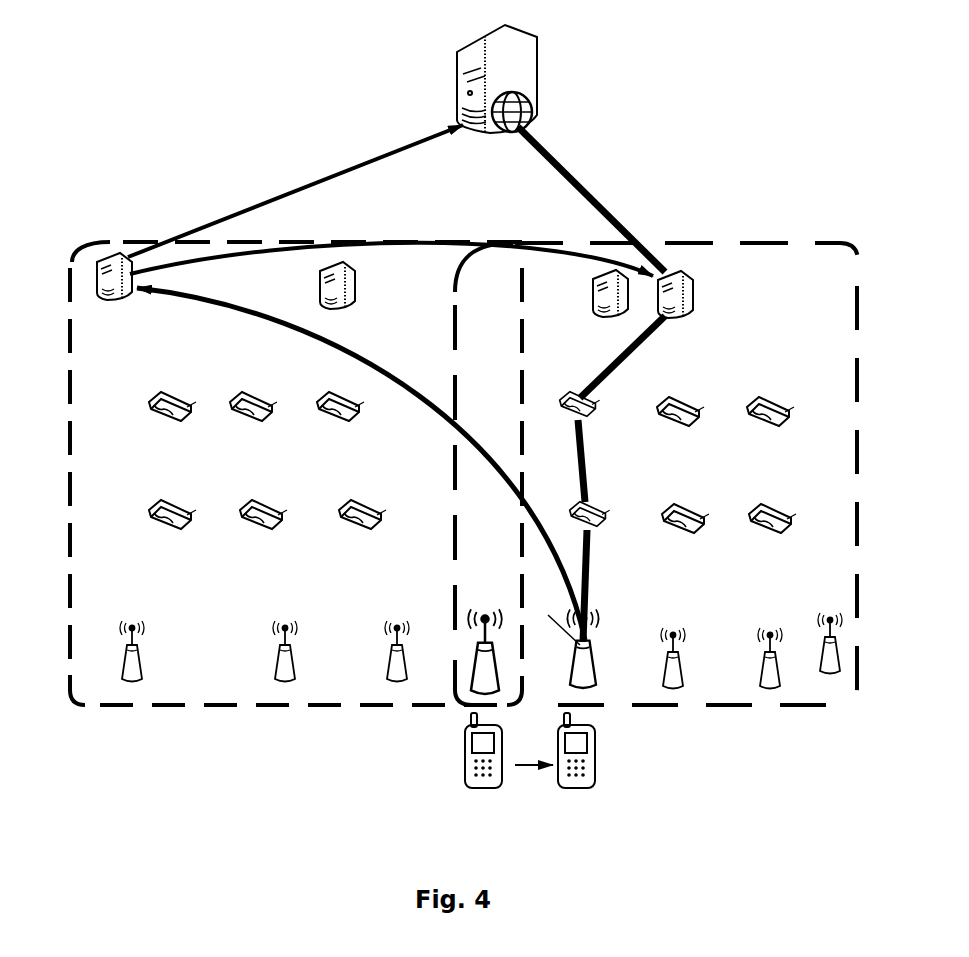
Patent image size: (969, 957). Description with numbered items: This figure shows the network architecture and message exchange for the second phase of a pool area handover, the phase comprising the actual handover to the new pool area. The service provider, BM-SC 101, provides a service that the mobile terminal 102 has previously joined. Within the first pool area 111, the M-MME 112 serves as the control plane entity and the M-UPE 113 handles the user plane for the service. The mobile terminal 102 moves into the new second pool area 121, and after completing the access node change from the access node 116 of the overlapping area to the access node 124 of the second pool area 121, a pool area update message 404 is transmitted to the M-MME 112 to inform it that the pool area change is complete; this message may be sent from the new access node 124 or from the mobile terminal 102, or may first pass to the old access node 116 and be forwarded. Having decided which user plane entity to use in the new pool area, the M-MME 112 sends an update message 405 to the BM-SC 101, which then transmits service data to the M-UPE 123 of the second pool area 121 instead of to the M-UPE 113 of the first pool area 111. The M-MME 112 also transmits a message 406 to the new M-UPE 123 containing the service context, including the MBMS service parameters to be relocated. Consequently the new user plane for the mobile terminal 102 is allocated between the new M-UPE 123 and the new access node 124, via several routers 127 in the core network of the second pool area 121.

The BM-SC 101 is at (457, 65).
The mobile terminal 102 is at (468, 778).
The Pool Area 1 111 is at (72, 249).
The M-MME 112 is at (136, 290).
The M-UPE 113 is at (357, 292).
The access node 116 is at (465, 698).
The Pool Area 2 121 is at (851, 254).
The M-UPE 123 is at (696, 290).
The access node 124 is at (603, 692).
The routers 127 is at (560, 398).
The pool area update message 404 is at (361, 464).
The update message 405 is at (295, 191).
The message 406 is at (391, 264).